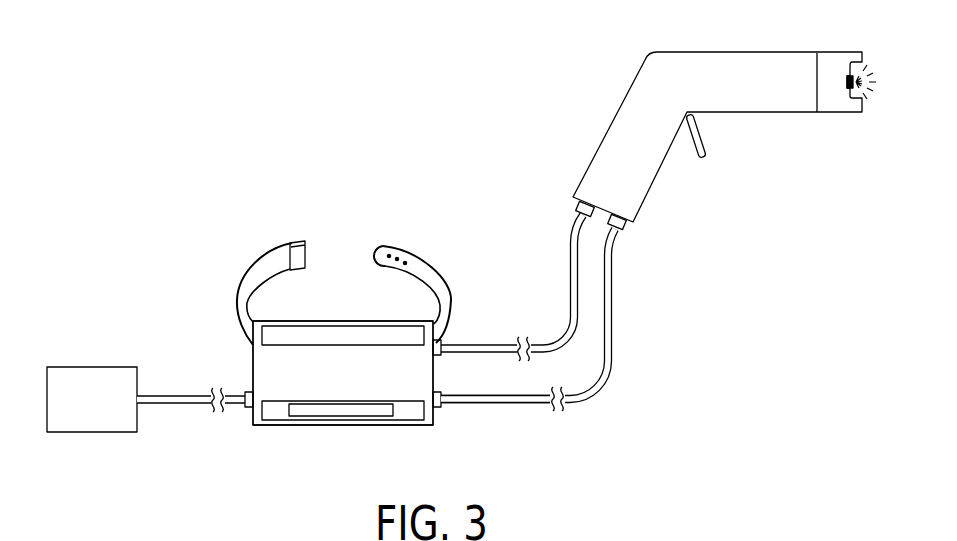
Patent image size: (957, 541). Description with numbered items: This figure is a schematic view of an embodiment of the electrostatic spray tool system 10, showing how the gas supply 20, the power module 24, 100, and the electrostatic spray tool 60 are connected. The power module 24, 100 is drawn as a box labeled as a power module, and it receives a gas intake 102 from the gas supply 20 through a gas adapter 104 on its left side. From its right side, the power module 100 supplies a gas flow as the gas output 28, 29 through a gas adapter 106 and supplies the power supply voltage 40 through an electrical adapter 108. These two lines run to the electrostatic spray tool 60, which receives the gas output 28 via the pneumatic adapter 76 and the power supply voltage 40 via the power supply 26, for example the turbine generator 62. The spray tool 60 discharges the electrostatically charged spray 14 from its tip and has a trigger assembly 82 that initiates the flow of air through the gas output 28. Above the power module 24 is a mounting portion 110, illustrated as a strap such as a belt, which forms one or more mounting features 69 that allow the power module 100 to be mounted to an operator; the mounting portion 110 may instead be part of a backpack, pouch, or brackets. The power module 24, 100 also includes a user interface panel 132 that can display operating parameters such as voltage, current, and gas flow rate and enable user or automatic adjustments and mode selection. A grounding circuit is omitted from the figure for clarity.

The electrostatic spray tool system 10 is at (292, 160).
The electrostatically charged spray 14 is at (871, 60).
The gas supply 20 is at (92, 367).
The power module 24 is at (345, 426).
The power supply 26 is at (280, 426).
The gas output 28 is at (507, 403).
The gas conduit 29 is at (520, 444).
The power supply voltage 40 is at (482, 344).
The electrostatic spray tool 60 is at (668, 52).
The turbine generator 62 is at (373, 419).
The mounting features 69 is at (275, 252).
The pneumatic adapter 76 is at (624, 230).
The trigger assembly 82 is at (702, 158).
The power module 100 is at (345, 426).
The gas intake 102 is at (196, 403).
The gas adapter 104 is at (247, 407).
The gas adapter 106 is at (441, 405).
The electrical adapter 108 is at (441, 352).
The mounting portion 110 is at (410, 308).
The user interface panel 132 is at (262, 337).